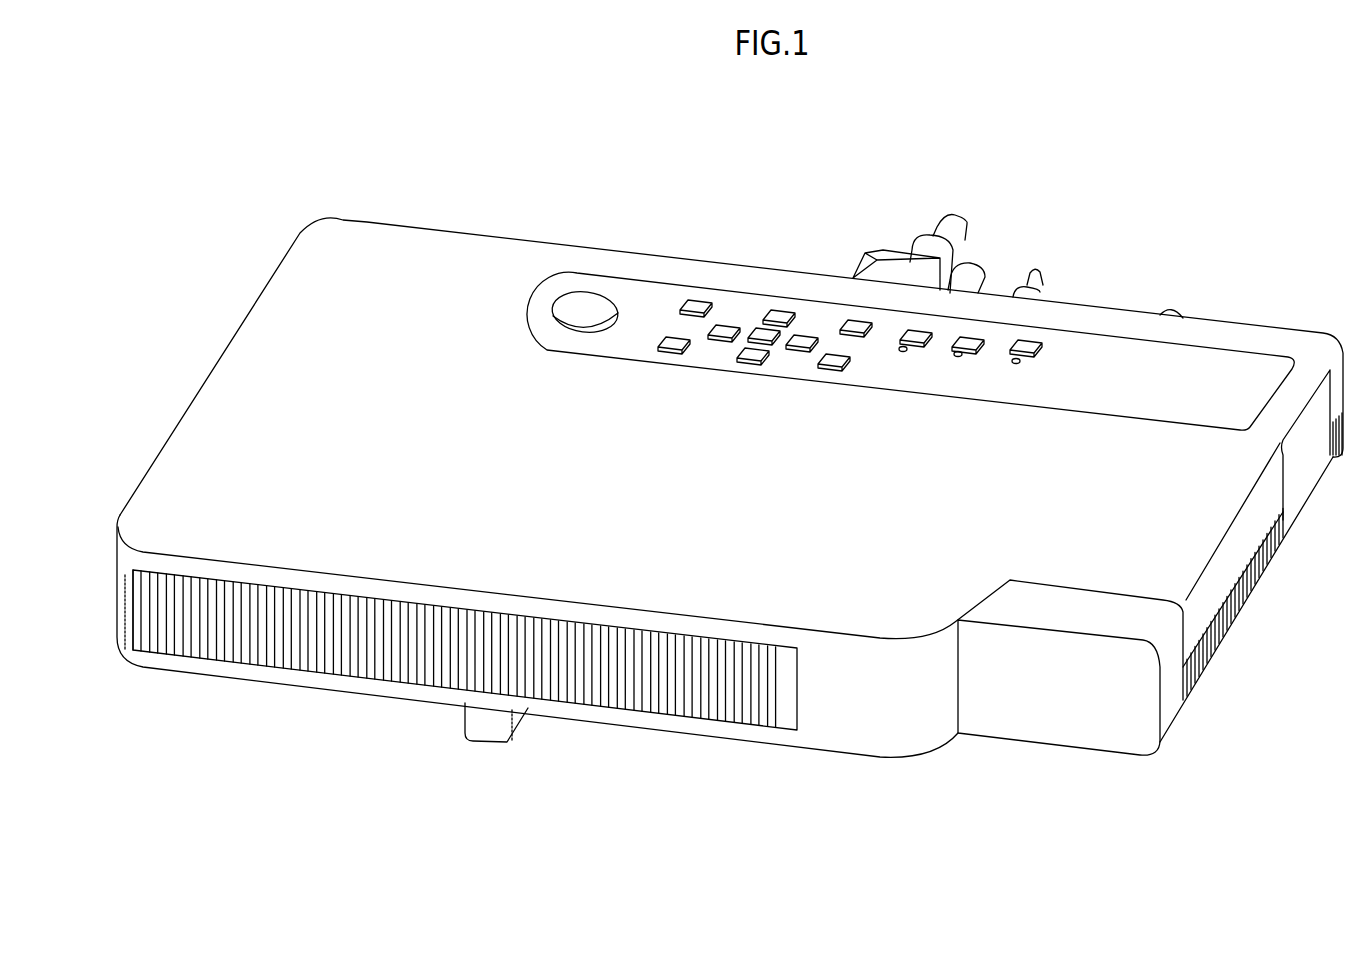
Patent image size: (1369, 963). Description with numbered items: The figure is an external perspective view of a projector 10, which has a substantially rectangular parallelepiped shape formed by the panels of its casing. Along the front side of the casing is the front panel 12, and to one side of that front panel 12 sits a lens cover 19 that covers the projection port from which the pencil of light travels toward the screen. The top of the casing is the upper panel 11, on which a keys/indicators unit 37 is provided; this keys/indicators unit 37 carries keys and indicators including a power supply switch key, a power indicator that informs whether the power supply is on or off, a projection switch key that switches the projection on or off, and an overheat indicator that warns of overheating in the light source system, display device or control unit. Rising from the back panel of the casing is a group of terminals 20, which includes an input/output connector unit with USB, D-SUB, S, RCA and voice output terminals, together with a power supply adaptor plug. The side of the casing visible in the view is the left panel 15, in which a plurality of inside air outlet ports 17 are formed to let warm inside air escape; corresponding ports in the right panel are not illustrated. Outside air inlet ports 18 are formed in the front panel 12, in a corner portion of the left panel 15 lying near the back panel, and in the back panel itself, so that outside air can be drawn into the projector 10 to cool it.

The projector 10 is at (688, 163).
The upper panel 11 is at (487, 250).
The front panel 12 is at (845, 712).
The left panel 15 is at (1238, 547).
The inside air outlet ports 17 is at (1225, 633).
The outside air inlet ports 18 is at (728, 707).
The lens cover 19 is at (1100, 720).
The group of terminals 20 is at (993, 203).
The keys/indicators unit 37 is at (779, 241).